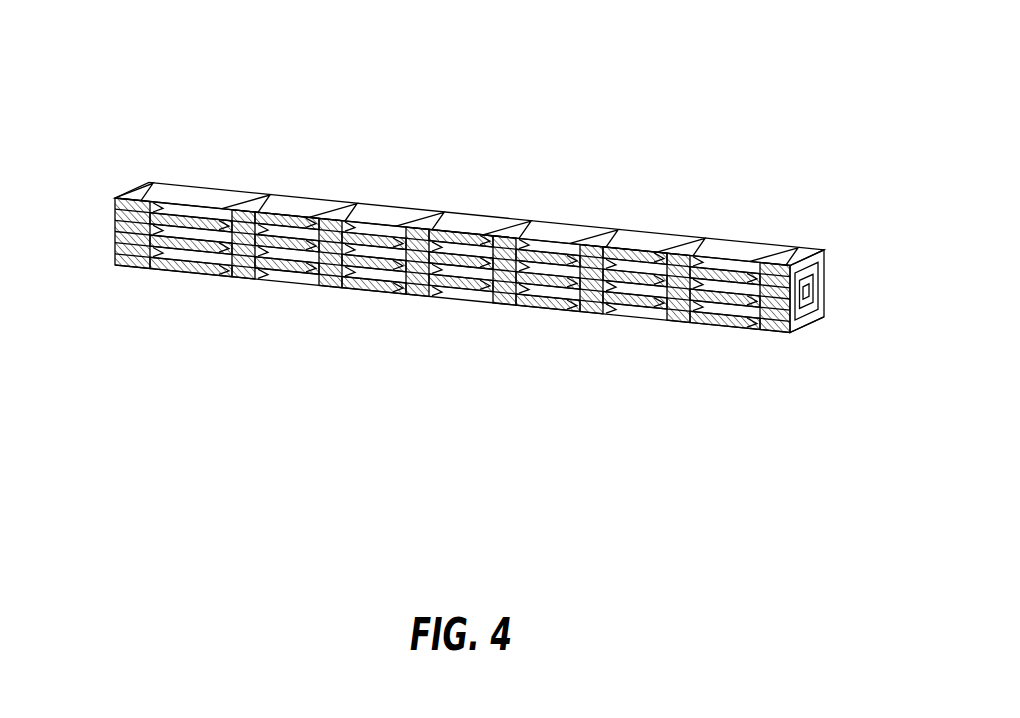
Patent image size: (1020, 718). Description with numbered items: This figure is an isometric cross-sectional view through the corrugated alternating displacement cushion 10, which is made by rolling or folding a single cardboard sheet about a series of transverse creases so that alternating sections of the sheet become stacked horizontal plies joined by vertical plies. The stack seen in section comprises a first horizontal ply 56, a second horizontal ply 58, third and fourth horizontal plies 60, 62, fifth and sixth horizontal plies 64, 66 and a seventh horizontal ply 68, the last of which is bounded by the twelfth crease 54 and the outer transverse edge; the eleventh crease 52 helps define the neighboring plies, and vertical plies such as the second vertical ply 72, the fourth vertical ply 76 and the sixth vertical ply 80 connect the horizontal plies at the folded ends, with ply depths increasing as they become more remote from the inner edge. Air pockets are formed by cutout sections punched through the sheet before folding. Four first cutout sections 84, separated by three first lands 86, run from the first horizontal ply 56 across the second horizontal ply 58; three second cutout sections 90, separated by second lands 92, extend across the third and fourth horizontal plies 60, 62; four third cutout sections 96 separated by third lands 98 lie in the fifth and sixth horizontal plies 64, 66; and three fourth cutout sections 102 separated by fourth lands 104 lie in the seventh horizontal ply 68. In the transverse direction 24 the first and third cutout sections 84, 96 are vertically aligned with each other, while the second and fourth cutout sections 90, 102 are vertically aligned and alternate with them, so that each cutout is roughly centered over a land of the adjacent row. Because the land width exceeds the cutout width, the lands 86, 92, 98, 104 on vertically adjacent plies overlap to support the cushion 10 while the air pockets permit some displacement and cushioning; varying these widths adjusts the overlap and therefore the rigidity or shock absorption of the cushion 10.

The cushion 10 is at (565, 55).
The transverse direction 24 is at (377, 393).
The eleventh crease 52 is at (828, 257).
The twelfth crease 54 is at (824, 318).
The first horizontal ply 56 is at (114, 231).
The second horizontal ply 58 is at (114, 219).
The third horizontal ply 60 is at (114, 241).
The fourth horizontal ply 62 is at (114, 212).
The fifth horizontal ply 64 is at (114, 251).
The sixth horizontal ply 66 is at (116, 198).
The seventh horizontal ply 68 is at (114, 263).
The second vertical ply 72 is at (824, 284).
The fourth vertical ply 76 is at (826, 297).
The sixth vertical ply 80 is at (826, 263).
The first cutout sections 84 is at (212, 230).
The first lands 86 is at (247, 274).
The second cutout sections 90 is at (269, 223).
The second lands 92 is at (192, 260).
The third cutout sections 96 is at (197, 232).
The third lands 98 is at (291, 272).
The fourth cutout sections 102 is at (270, 272).
The fourth lands 104 is at (154, 268).